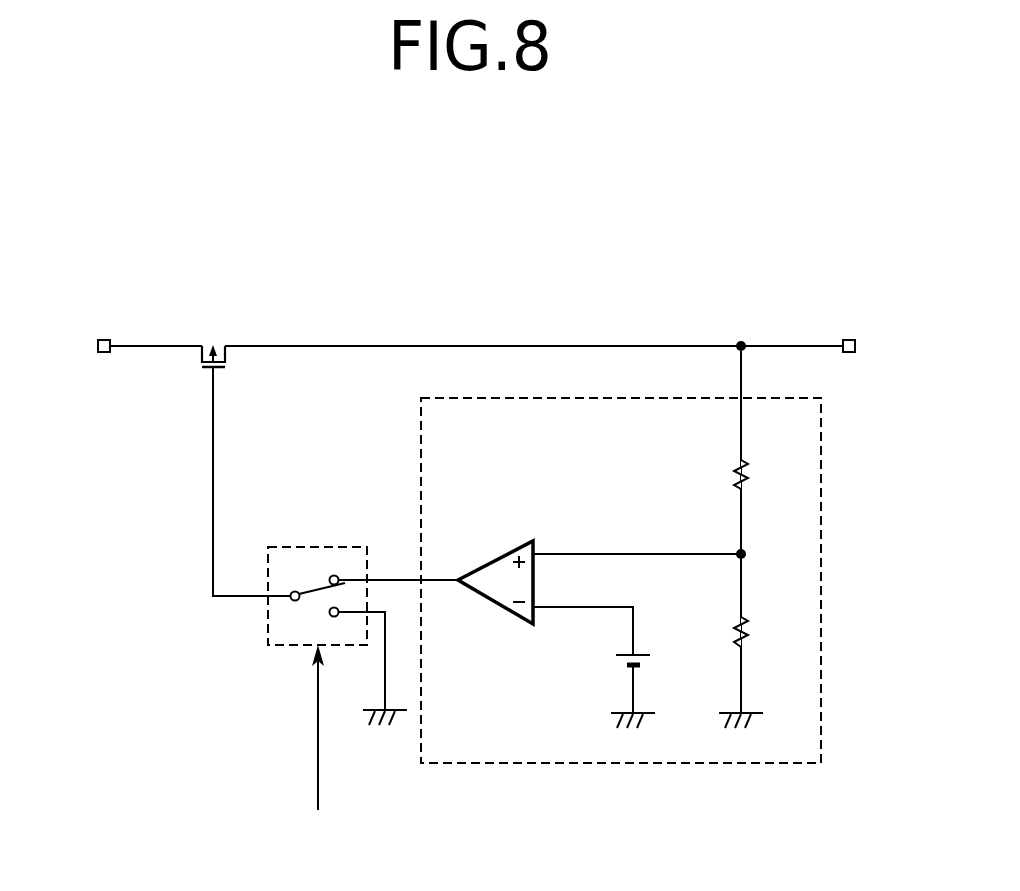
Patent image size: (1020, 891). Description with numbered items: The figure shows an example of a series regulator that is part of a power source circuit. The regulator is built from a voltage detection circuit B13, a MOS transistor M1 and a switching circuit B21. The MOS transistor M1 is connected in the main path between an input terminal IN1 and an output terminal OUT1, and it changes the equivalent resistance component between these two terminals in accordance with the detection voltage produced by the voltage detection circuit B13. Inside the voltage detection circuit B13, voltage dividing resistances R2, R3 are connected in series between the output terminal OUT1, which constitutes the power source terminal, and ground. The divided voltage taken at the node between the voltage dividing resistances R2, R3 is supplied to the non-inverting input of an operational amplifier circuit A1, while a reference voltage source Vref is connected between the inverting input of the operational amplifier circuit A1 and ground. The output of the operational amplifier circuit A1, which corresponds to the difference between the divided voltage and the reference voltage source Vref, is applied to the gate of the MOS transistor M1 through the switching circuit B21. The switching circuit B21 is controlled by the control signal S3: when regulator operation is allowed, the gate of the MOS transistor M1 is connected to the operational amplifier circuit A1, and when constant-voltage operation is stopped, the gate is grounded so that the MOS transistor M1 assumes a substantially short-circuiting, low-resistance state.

The input terminal IN1 is at (100, 340).
The output terminal OUT1 is at (851, 339).
The MOS transistor M1 is at (244, 452).
The voltage detection circuit B13 is at (622, 397).
The switching circuit B21 is at (320, 547).
The control signal S3 is at (317, 748).
The operational amplifier circuit A1 is at (493, 606).
The voltage dividing resistance R2 is at (760, 473).
The voltage dividing resistance R3 is at (760, 633).
The reference voltage source Vref is at (606, 688).